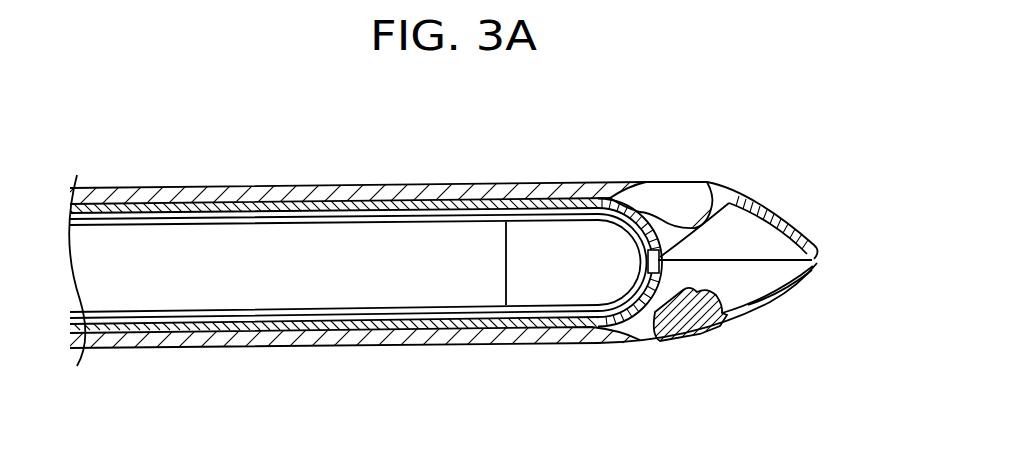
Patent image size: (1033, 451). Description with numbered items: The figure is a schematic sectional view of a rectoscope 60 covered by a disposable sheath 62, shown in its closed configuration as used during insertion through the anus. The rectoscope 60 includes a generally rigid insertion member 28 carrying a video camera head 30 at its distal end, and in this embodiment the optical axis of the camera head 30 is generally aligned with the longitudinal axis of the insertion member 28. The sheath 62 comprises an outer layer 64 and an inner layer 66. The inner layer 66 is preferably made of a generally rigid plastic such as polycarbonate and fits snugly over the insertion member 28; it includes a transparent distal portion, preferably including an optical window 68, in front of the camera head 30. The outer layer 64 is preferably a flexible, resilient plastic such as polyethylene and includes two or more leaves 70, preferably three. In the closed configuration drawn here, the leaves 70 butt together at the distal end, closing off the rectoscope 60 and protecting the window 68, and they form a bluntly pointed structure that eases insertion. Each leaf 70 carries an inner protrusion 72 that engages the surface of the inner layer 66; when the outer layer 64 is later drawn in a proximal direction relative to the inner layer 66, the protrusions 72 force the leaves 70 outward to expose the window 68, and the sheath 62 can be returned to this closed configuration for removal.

The rectoscope 60 is at (170, 92).
The disposable sheath 62 is at (717, 106).
The outer layer 64 is at (496, 182).
The inner protrusion 72 is at (653, 183).
The optical window 68 is at (725, 222).
The leaves 70 is at (791, 220).
The inner layer 66 is at (651, 318).
The video camera head 30 is at (557, 310).
The insertion member 28 is at (425, 313).